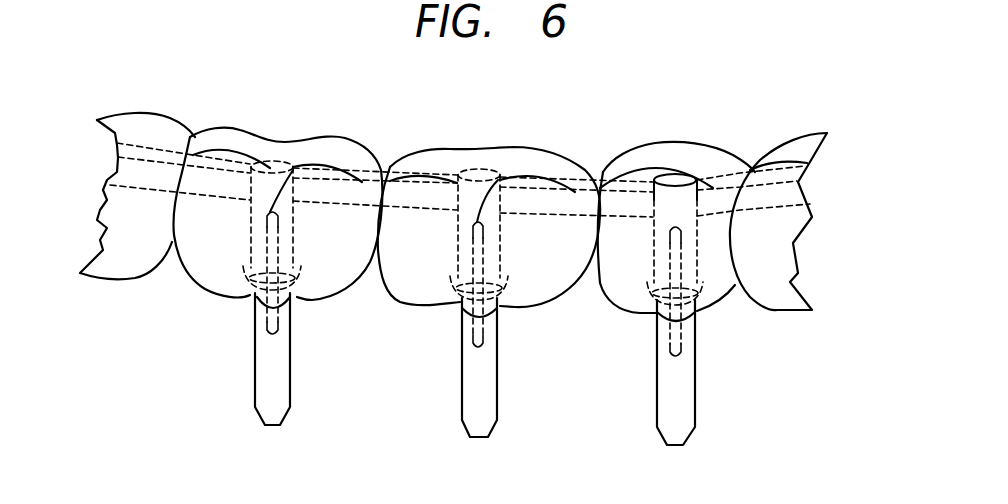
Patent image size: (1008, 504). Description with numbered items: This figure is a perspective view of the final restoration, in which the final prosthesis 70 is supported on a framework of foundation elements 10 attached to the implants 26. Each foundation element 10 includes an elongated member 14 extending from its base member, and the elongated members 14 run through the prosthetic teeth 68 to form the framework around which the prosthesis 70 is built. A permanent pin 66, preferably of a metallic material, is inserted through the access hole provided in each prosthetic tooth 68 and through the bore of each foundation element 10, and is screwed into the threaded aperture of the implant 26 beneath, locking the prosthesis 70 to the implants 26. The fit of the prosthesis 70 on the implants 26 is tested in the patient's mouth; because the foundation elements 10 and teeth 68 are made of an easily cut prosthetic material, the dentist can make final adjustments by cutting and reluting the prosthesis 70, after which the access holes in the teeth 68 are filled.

The foundation element 10 is at (250, 252).
The elongated member 14 is at (143, 145).
The implant 26 is at (287, 390).
The permanent pin 66 is at (267, 323).
The prosthetic teeth 68 is at (247, 128).
The final prosthesis 70 is at (825, 235).